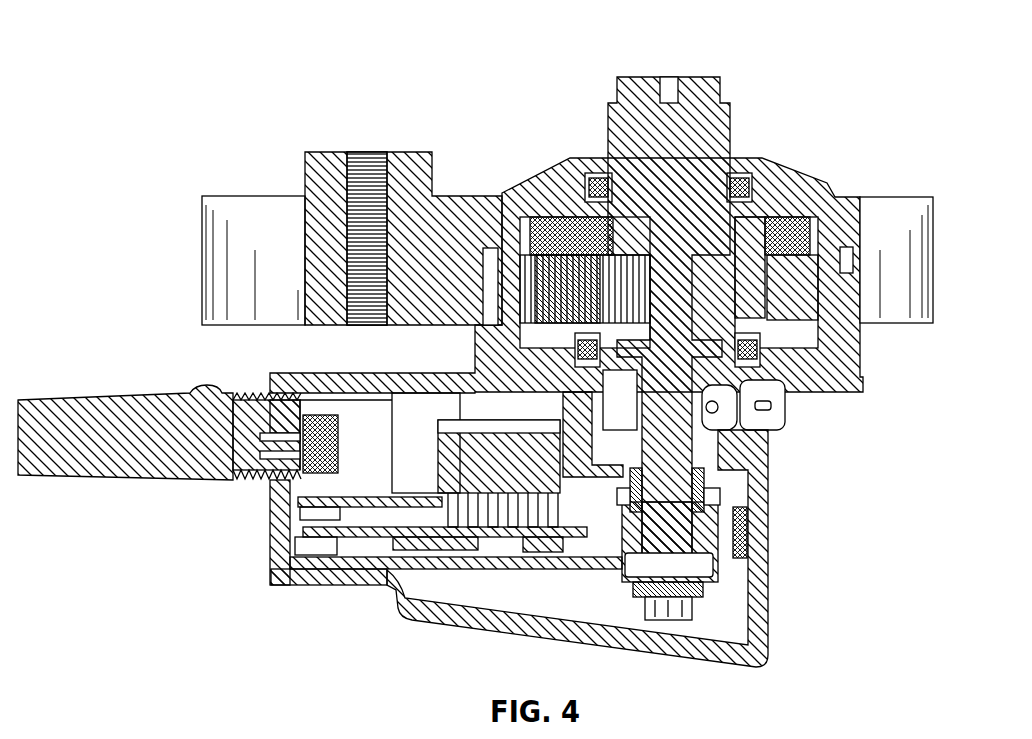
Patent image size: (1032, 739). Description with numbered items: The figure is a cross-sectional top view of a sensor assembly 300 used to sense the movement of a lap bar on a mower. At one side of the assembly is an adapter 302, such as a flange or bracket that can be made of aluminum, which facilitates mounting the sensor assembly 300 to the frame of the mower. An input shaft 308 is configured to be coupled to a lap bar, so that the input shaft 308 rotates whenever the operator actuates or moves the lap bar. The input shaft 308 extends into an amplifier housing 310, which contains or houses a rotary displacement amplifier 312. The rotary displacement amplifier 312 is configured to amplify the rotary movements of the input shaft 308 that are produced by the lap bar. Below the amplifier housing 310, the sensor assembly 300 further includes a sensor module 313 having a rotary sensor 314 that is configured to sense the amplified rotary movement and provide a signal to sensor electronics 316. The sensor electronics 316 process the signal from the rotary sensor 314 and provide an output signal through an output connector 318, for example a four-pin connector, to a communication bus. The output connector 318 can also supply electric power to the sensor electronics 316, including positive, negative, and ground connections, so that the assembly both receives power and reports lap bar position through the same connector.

The sensor assembly 300 is at (160, 70).
The adapter 302 is at (330, 172).
The input shaft 308 is at (656, 100).
The amplifier housing 310 is at (561, 192).
The rotary displacement amplifier 312 is at (790, 290).
The sensor module 313 is at (775, 505).
The rotary sensor 314 is at (658, 488).
The sensor electronics 316 is at (372, 542).
The output connector 318 is at (320, 473).